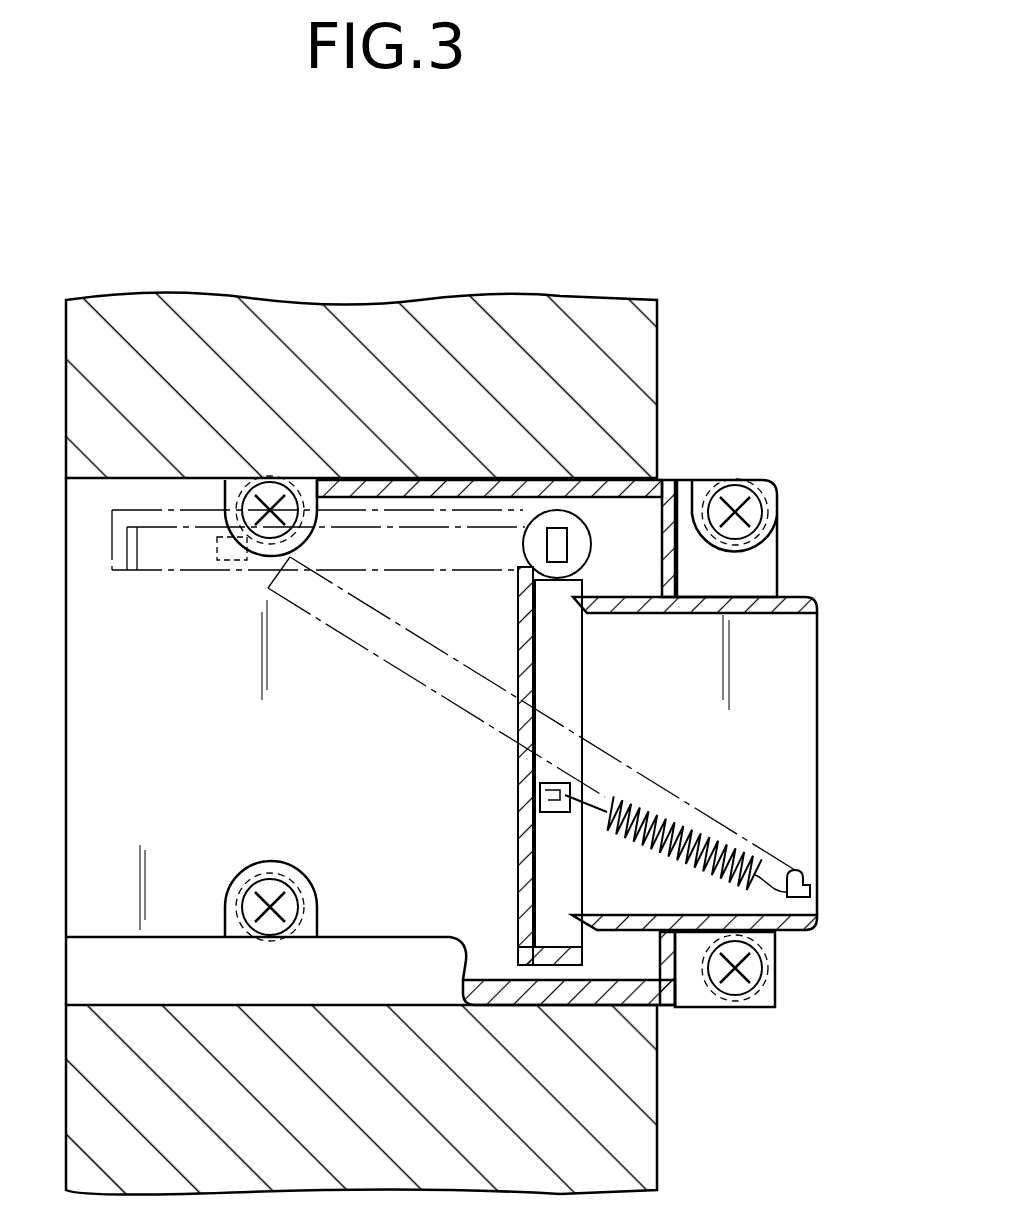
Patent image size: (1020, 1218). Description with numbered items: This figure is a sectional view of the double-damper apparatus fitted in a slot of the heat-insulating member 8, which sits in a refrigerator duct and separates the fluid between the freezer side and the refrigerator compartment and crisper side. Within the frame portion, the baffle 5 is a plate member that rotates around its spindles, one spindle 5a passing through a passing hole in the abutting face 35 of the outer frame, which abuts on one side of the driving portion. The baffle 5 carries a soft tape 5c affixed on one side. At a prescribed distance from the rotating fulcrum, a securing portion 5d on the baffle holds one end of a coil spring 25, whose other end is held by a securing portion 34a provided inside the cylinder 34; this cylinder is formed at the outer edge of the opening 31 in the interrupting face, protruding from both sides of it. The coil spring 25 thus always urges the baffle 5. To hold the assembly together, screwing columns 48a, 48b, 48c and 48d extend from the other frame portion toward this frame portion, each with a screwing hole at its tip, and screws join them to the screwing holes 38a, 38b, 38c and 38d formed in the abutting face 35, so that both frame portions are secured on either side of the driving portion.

The heat-insulating member 8 is at (575, 320).
The baffle 5 is at (490, 762).
The spindle 5a is at (577, 532).
The soft tape 5c is at (565, 682).
The securing portion 5d is at (540, 805).
The coil spring 25 is at (755, 865).
The opening 31 is at (800, 690).
The cylinder 34 is at (792, 598).
The securing portion 34a is at (812, 888).
The abutting face 35 is at (757, 582).
The screwing hole 38a is at (268, 490).
The screwing hole 38b is at (737, 503).
The screwing hole 38c is at (256, 908).
The screwing hole 38d is at (746, 975).
The screwing column 48a is at (316, 482).
The screwing column 48b is at (778, 528).
The screwing column 48c is at (278, 862).
The screwing column 48d is at (776, 950).